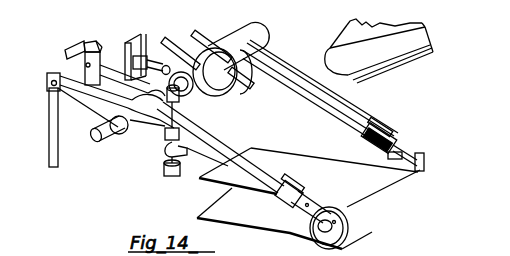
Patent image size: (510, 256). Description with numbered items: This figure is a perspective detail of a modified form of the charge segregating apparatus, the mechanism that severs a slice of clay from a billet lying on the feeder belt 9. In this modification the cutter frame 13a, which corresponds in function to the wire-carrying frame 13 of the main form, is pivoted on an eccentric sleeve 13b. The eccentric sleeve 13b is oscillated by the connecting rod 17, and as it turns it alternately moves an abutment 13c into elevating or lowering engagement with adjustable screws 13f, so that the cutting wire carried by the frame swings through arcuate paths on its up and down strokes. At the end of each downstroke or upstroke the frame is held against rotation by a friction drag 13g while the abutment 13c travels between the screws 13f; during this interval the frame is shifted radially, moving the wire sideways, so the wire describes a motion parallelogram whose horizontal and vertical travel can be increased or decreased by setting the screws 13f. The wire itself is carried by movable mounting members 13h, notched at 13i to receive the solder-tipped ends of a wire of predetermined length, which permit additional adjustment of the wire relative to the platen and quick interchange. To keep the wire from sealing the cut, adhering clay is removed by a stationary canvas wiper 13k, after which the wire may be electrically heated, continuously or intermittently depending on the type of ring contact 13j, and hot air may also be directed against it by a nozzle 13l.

The feeder belt 9 is at (306, 166).
The frame 13 is at (252, 175).
The cutter frame 13a is at (283, 53).
The eccentric sleeve 13b is at (109, 142).
The abutment 13c is at (156, 142).
The adjustable screws 13f is at (192, 107).
The friction drag 13g is at (189, 54).
The movable mounting members 13h is at (413, 152).
The notches 13i is at (424, 166).
The ring contact 13j is at (238, 84).
The stationary canvas wiper 13k is at (378, 74).
The nozzle 13l is at (378, 51).
The connecting rod 17 is at (49, 130).